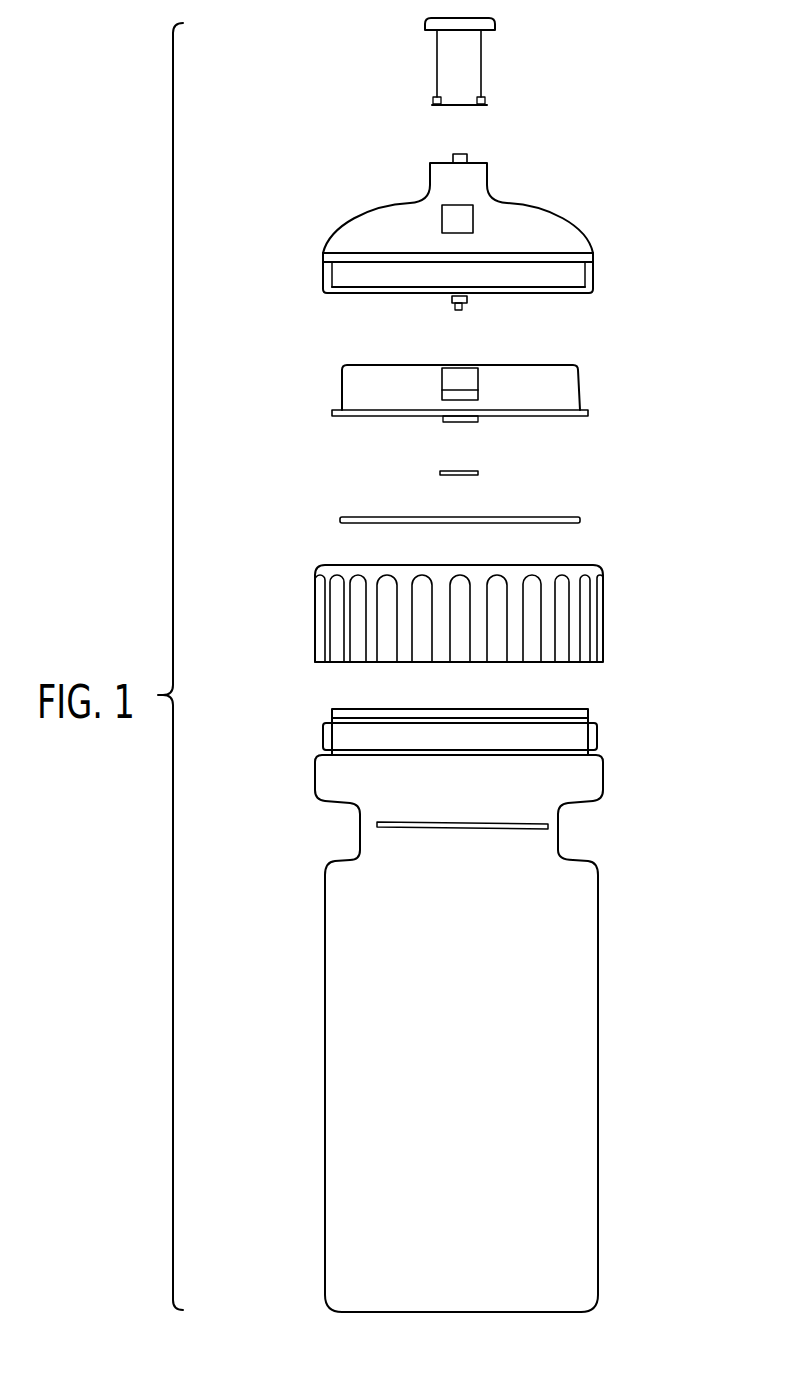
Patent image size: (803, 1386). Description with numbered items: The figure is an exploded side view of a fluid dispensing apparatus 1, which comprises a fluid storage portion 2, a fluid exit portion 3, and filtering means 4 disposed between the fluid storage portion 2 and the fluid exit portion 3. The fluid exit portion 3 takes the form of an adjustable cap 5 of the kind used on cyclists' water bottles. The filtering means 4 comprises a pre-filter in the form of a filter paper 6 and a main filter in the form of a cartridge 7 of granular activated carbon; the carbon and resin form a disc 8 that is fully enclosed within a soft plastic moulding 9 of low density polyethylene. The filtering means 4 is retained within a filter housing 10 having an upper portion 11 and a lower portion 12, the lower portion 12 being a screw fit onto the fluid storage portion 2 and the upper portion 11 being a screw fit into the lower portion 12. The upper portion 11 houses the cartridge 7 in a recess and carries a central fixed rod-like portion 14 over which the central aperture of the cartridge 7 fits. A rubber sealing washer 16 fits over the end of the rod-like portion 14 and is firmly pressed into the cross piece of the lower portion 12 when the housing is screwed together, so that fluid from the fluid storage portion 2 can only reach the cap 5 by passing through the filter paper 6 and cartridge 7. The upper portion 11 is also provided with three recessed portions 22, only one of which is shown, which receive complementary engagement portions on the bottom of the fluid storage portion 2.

The fluid dispensing apparatus 1 is at (431, 1010).
The fluid storage portion 2 is at (600, 952).
The fluid exit portion 3 is at (427, 54).
The filtering means 4 is at (430, 359).
The adjustable cap 5 is at (496, 23).
The filter paper 6 is at (510, 518).
The cartridge 7 is at (320, 398).
The disc 8 is at (458, 377).
The soft plastic moulding 9 is at (573, 390).
The filter housing 10 is at (511, 224).
The upper portion 11 is at (370, 226).
The lower portion 12 is at (605, 603).
The rod-like portion 14 is at (466, 153).
The rubber sealing washer 16 is at (480, 470).
The recessed portions 22 is at (462, 210).